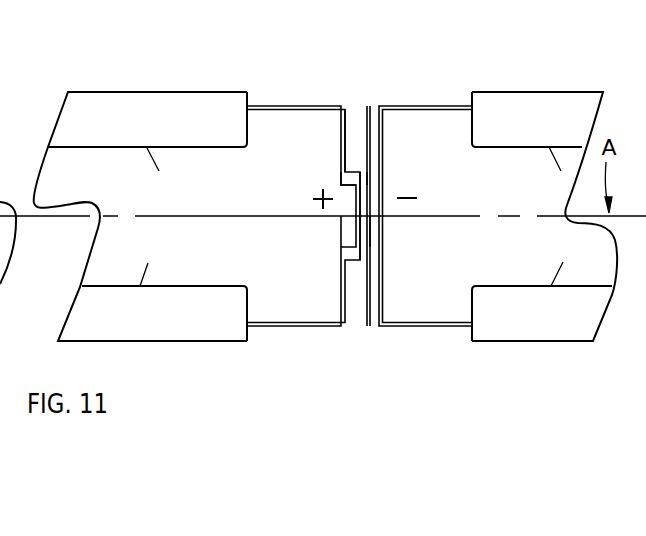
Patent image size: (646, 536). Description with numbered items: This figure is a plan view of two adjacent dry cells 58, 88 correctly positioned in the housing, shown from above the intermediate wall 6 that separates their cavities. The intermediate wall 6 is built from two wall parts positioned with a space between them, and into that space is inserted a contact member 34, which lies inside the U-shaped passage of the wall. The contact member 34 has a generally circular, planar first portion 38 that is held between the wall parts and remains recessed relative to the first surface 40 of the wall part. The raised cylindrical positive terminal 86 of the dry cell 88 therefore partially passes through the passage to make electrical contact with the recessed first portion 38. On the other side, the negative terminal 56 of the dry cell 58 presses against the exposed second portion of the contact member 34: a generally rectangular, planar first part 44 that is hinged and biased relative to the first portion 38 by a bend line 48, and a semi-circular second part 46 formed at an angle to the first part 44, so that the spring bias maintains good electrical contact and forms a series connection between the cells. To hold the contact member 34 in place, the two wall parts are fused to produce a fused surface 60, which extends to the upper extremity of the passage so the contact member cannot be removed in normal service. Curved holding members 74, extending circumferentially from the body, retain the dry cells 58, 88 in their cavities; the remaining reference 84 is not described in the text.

The intermediate wall 6 is at (355, 118).
The contact member 34 is at (361, 257).
The first portion 38 is at (341, 185).
The first surface 40 is at (343, 130).
The first part 44 is at (382, 238).
The second part 46 is at (373, 230).
The bend line 48 is at (374, 175).
The negative terminal 56 is at (395, 217).
The dry cell 58 is at (476, 196).
The fused surface 60 is at (358, 137).
The holding members 74 is at (97, 96).
The seal 84 is at (160, 171).
The positive terminal 86 is at (341, 216).
The dry cell 88 is at (219, 194).